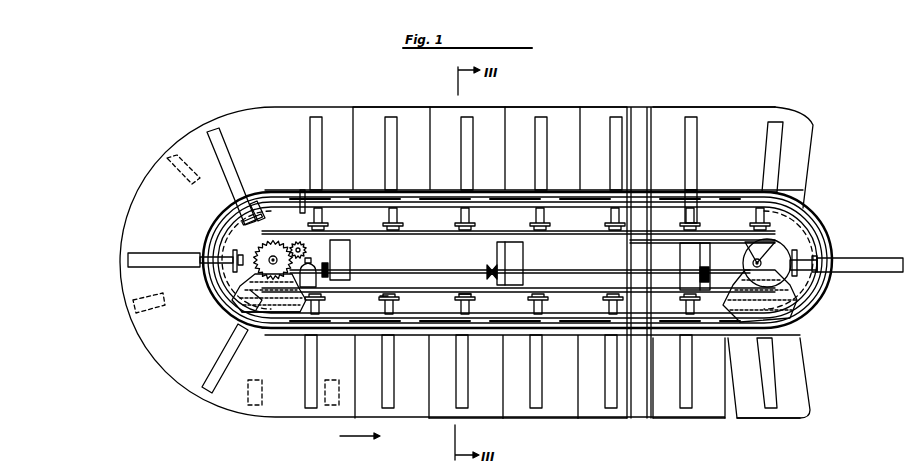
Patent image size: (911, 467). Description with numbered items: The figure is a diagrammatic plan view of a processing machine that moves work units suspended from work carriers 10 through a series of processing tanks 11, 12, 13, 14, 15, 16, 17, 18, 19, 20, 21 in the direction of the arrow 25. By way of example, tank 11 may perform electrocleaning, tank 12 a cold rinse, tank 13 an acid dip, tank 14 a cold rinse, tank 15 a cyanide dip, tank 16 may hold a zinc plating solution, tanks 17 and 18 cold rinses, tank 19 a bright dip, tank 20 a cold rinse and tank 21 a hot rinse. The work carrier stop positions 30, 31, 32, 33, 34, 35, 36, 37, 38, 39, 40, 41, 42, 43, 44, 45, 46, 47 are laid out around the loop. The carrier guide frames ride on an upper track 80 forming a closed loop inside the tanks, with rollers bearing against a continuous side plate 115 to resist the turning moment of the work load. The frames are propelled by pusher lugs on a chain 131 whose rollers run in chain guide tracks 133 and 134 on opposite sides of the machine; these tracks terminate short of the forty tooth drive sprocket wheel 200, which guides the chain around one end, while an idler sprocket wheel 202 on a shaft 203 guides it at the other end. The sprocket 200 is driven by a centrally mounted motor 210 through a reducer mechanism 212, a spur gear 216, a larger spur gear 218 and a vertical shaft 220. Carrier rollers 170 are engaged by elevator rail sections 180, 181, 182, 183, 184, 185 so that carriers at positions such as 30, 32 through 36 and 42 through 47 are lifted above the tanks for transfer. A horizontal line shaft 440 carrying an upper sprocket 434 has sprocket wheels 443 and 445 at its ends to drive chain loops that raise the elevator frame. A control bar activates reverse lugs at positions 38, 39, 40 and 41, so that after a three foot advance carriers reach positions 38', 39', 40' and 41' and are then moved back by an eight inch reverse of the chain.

The work carrier 10 is at (793, 131).
The processing tank 11 is at (708, 106).
The processing tank 12 is at (605, 108).
The processing tank 13 is at (537, 107).
The processing tank 14 is at (467, 108).
The processing tank 15 is at (372, 108).
The processing tank 16 is at (283, 106).
The processing tank 17 is at (490, 423).
The processing tank 18 is at (530, 420).
The processing tank 19 is at (628, 423).
The processing tank 20 is at (677, 422).
The processing tank 21 is at (753, 422).
The arrow 25 is at (352, 438).
The work carrier stop position 30 is at (863, 257).
The work carrier stop position 31 is at (773, 122).
The work carrier stop position 32 is at (698, 127).
The work carrier stop position 33 is at (622, 127).
The work carrier stop position 34 is at (547, 130).
The work carrier stop position 35 is at (475, 123).
The work carrier stop position 36 is at (398, 115).
The work carrier stop position 37 is at (318, 117).
The work carrier stop position 38 is at (231, 157).
The carrier position 38' is at (159, 169).
The work carrier stop position 39 is at (161, 271).
The carrier position 39' is at (131, 314).
The work carrier stop position 40 is at (215, 377).
The carrier position 40' is at (249, 411).
The work carrier stop position 41 is at (299, 391).
The carrier position 41' is at (327, 417).
The work carrier stop position 42 is at (392, 410).
The work carrier stop position 43 is at (465, 408).
The work carrier stop position 44 is at (538, 408).
The work carrier stop position 45 is at (610, 408).
The work carrier stop position 46 is at (688, 408).
The work carrier stop position 47 is at (773, 410).
The upper track 80 is at (248, 283).
The side plate 115 is at (270, 333).
The chain 131 is at (215, 212).
The chain guide track 133 is at (408, 208).
The chain guide track 134 is at (408, 314).
The roller 170 is at (463, 295).
The elevator rail section 180 is at (700, 237).
The elevator rail section 181 is at (566, 230).
The elevator rail section 182 is at (303, 208).
The elevator rail section 183 is at (382, 297).
The elevator rail section 184 is at (488, 303).
The elevator rail section 185 is at (748, 243).
The sprocket wheel 200 is at (240, 316).
The idler sprocket wheel 202 is at (798, 298).
The shaft 203 is at (760, 262).
The motor 210 is at (318, 288).
The reducer mechanism 212 is at (311, 245).
The spur gear 216 is at (296, 247).
The spur gear 218 is at (250, 290).
The vertical shaft 220 is at (257, 252).
The upper sprocket 434 is at (487, 268).
The line shaft 440 is at (408, 271).
The sprocket wheel 443 is at (328, 265).
The sprocket wheel 445 is at (702, 268).